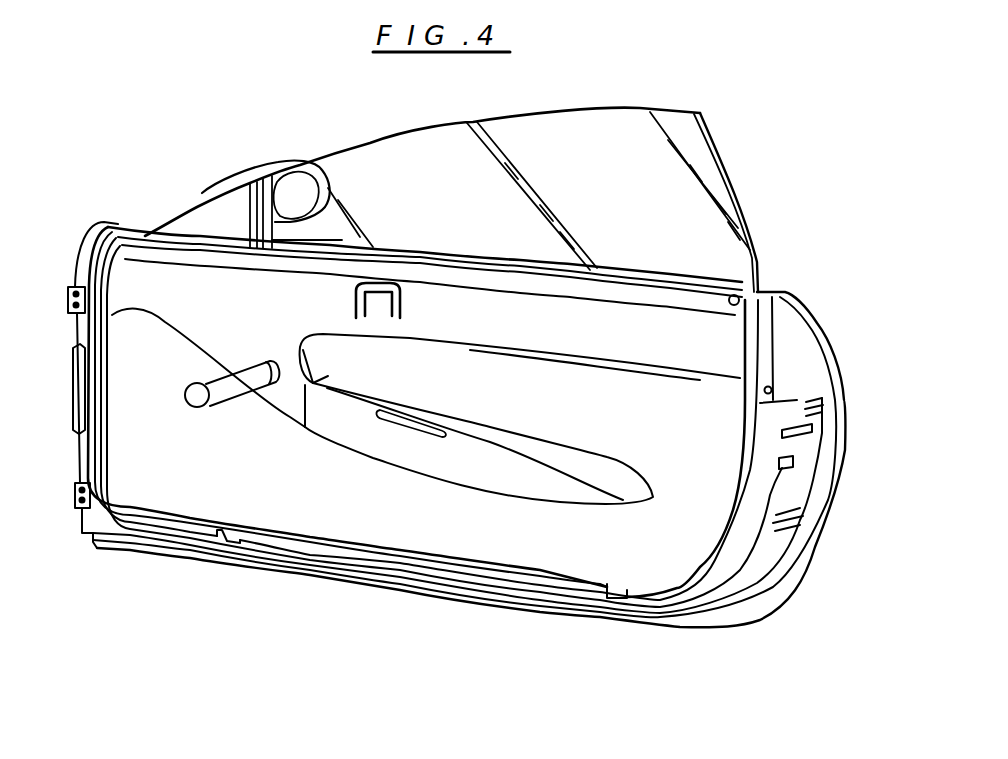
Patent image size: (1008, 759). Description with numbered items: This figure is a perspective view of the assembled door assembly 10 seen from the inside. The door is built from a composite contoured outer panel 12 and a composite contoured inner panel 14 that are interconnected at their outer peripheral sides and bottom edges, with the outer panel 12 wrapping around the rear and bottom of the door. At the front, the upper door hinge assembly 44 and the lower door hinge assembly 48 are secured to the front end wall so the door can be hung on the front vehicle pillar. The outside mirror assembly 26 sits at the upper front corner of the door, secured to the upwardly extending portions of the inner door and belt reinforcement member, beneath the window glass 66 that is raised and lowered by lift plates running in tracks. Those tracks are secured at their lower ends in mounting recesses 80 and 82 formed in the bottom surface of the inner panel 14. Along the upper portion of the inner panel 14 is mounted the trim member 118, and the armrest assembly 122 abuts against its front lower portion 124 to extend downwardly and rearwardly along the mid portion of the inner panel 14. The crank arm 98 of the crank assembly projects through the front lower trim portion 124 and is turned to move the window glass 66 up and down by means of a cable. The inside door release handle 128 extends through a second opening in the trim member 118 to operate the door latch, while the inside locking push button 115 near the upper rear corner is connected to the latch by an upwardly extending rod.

The door assembly 10 is at (232, 169).
The outer panel 12 is at (820, 340).
The inner panel 14 is at (500, 548).
The outside mirror assembly 26 is at (263, 176).
The upper door hinge assembly 44 is at (72, 282).
The lower door hinge assembly 48 is at (80, 506).
The window glass 66 is at (715, 168).
The mounting recess 80 is at (226, 540).
The mounting recess 82 is at (620, 597).
The crank arm 98 is at (198, 408).
The inside locking push button 115 is at (735, 293).
The trim member 118 is at (470, 350).
The armrest assembly 122 is at (543, 458).
The front lower portion of the trim member 124 is at (305, 362).
The inside door release handle 128 is at (380, 292).